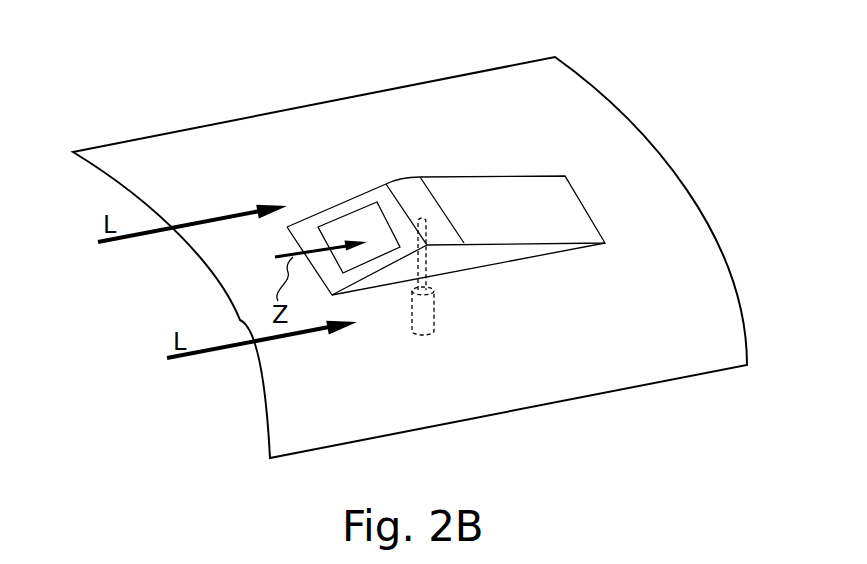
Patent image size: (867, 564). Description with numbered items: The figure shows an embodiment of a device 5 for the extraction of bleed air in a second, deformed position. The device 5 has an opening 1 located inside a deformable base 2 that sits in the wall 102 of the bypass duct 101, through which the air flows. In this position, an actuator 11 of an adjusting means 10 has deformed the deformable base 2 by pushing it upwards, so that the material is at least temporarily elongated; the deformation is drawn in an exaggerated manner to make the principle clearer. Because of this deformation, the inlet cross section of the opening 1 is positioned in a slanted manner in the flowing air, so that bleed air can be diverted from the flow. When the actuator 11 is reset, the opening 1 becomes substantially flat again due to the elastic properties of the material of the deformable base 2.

The bypass duct 101 is at (410, 233).
The wall 102 is at (310, 143).
The device for the extraction of bleed air 5 is at (453, 189).
The deformable base 2 is at (555, 215).
The opening 1 is at (348, 227).
The actuator 11 is at (427, 265).
The adjusting means 10 is at (424, 313).